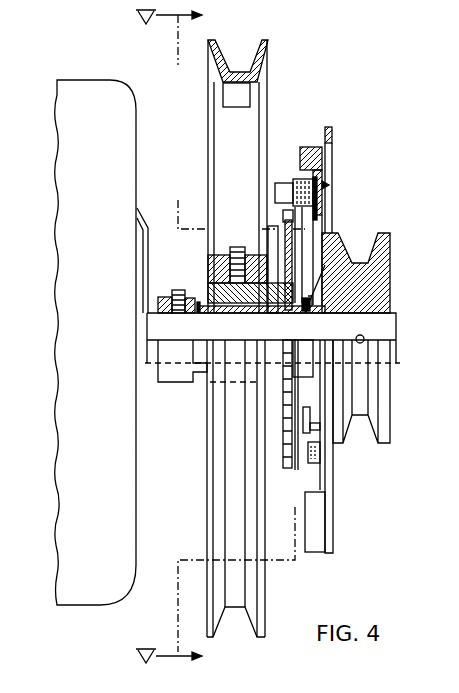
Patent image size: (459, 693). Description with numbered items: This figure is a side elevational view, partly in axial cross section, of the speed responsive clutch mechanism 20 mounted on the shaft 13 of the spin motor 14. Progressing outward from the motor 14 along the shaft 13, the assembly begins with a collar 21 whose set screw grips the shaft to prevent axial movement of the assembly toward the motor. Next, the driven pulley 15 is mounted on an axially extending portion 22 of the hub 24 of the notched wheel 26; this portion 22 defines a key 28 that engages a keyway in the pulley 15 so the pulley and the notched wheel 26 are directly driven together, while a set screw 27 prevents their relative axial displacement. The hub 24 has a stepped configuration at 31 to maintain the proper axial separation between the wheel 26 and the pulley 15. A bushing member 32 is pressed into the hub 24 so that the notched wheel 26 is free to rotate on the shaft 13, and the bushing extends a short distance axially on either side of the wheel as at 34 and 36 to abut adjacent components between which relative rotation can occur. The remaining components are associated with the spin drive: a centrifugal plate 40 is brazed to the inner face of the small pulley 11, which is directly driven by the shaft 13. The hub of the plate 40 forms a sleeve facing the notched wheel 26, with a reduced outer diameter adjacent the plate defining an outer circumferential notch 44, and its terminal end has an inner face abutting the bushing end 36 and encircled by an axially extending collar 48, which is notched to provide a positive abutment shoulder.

The spin motor 14 is at (78, 85).
The driven pulley member 15 is at (268, 40).
The centrifugal plate 40 is at (335, 133).
The collar 48 is at (338, 246).
The small pulley 11 is at (386, 283).
The shaft 13 is at (403, 330).
The hub 24 is at (266, 256).
The set screw 27 is at (237, 243).
The key 28 is at (208, 285).
The axially extending portion 22 is at (200, 298).
The bushing extension 34 is at (188, 317).
The bushing member 32 is at (219, 315).
The stepped configuration 31 is at (265, 315).
The bushing extension 36 is at (303, 310).
The outer circumferential notch 44 is at (322, 308).
The collar 21 is at (189, 378).
The notched wheel 26 is at (288, 462).
The speed responsive clutch mechanism 20 is at (377, 544).